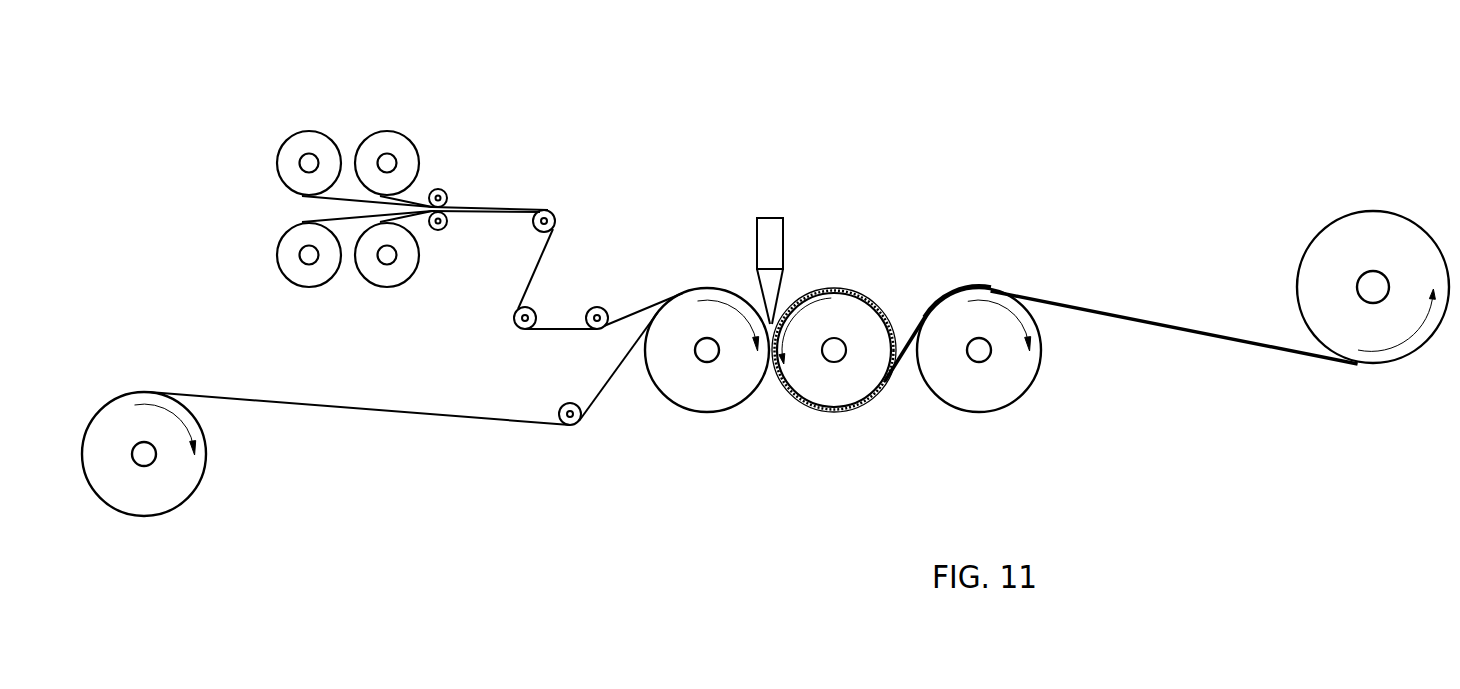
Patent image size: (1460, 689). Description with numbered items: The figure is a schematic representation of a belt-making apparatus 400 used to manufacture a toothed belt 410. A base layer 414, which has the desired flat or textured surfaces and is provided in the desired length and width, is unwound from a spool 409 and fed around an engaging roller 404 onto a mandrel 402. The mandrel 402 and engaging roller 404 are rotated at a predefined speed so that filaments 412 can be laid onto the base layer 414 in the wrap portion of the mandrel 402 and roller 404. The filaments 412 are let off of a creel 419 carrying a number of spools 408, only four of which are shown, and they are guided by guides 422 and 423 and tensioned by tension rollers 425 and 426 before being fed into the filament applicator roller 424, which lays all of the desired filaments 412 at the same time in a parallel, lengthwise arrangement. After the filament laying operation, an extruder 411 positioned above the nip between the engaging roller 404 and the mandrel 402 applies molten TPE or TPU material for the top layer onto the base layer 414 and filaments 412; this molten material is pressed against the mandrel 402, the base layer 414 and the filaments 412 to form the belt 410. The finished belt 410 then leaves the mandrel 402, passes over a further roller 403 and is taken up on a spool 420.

The apparatus 400 is at (764, 110).
The creel 419 is at (393, 66).
The spools 408 is at (318, 145).
The guide 423 is at (440, 190).
The guide 422 is at (445, 224).
The tension roller 425 is at (550, 213).
The filaments 412 is at (535, 262).
The tension roller 426 is at (512, 325).
The filament applicator roller 424 is at (607, 308).
The base layer 414 is at (315, 405).
The spool 409 is at (190, 470).
The engaging roller 404 is at (700, 403).
The extruder 411 is at (765, 227).
The mandrel 402 is at (823, 400).
The roll 403 is at (997, 397).
The toothed belt 410 is at (1168, 323).
The spool 420 is at (1373, 220).